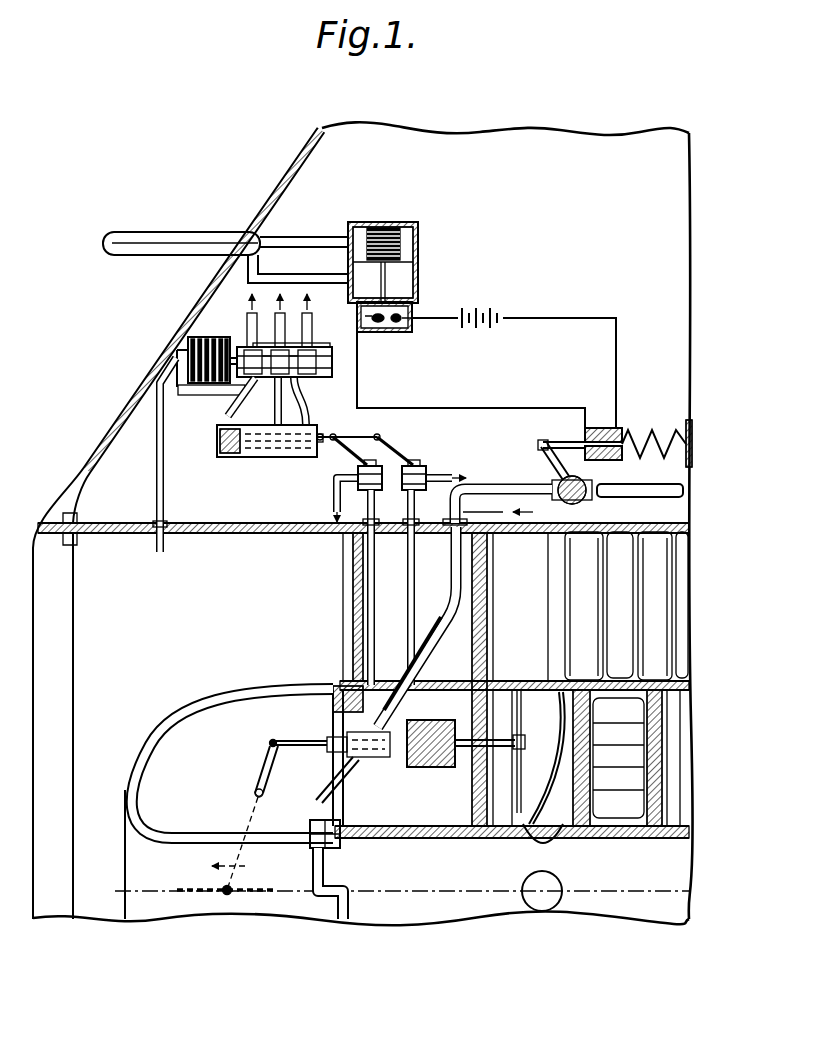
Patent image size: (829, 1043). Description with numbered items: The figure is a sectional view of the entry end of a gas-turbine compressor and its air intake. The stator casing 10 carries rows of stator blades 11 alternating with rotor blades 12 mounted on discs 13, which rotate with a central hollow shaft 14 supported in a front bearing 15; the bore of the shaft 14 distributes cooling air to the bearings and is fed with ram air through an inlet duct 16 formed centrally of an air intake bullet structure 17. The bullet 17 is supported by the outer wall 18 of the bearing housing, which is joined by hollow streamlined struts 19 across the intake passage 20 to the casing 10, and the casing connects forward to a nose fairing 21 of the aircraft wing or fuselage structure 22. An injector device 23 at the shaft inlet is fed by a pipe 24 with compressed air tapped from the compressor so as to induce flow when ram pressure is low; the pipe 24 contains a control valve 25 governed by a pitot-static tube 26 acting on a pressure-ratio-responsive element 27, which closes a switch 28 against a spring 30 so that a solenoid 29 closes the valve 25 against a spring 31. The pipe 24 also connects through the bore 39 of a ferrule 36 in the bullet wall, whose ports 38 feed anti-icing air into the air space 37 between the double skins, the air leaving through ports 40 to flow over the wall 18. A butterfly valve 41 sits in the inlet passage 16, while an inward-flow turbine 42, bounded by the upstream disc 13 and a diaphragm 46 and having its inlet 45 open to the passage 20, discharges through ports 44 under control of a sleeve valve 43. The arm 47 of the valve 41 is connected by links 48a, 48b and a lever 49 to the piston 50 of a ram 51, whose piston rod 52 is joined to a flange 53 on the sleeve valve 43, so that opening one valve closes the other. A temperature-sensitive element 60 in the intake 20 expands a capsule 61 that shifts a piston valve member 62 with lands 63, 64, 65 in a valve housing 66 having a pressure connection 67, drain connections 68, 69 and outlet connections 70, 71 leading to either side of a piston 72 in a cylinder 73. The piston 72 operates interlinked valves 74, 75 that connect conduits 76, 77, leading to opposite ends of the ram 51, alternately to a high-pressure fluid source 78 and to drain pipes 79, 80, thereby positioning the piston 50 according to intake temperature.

The stator casing 10 is at (558, 528).
The stator blades 11 is at (657, 612).
The rotor blades 12 is at (650, 583).
The discs 13 is at (664, 750).
The hollow shaft 14 is at (643, 915).
The bearing 15 is at (433, 838).
The inlet duct 16 is at (160, 911).
The air intake bullet structure 17 is at (253, 712).
The outer wall 18 is at (350, 680).
The hollow streamlined struts 19 is at (352, 618).
The intake passage 20 is at (176, 626).
The nose fairing 21 is at (58, 490).
The aircraft wing or fuselage structure 22 is at (230, 290).
The injector device 23 is at (327, 907).
The pipe 24 is at (445, 622).
The control valve 25 is at (557, 477).
The pitot-static tube 26 is at (133, 232).
The pressure-ratio-responsive element 27 is at (405, 258).
The switch 28 is at (412, 306).
The solenoid 29 is at (606, 426).
The spring 30 is at (398, 330).
The spring 31 is at (652, 430).
The ferrule 36 is at (313, 832).
The air space 37 is at (182, 727).
The ports 38 is at (337, 852).
The bore 39 is at (328, 795).
The ports 40 is at (290, 741).
The butterfly valve 41 is at (243, 894).
The inward-flow turbine 42 is at (572, 722).
The sleeve valve 43 is at (558, 840).
The ports 44 is at (530, 903).
The turbine inlet 45 is at (560, 681).
The diaphragm 46 is at (571, 766).
The operating arm 47 is at (225, 888).
The link 48a is at (269, 743).
The link 48b is at (218, 858).
The lever 49 is at (256, 765).
The piston 50 is at (406, 735).
The ram 51 is at (352, 698).
The piston rod 52 is at (500, 705).
The flange 53 is at (574, 789).
The temperature-sensitive element 60 is at (158, 553).
The capsule 61 is at (180, 352).
The piston valve member 62 is at (301, 376).
The land 63 is at (237, 392).
The land 64 is at (276, 386).
The land 65 is at (333, 360).
The valve housing 66 is at (330, 350).
The central connection 67 is at (263, 313).
The drain connection 68 is at (243, 322).
The drain connection 69 is at (312, 322).
The connection 70 is at (220, 434).
The connection 71 is at (309, 410).
The piston 72 is at (222, 460).
The cylinder 73 is at (270, 450).
The valve 74 is at (356, 470).
The valve 75 is at (413, 466).
The conduit 76 is at (370, 590).
The conduit 77 is at (410, 550).
The high-pressure fluid source 78 is at (488, 507).
The drain pipe 79 is at (330, 492).
The drain pipe 80 is at (437, 470).